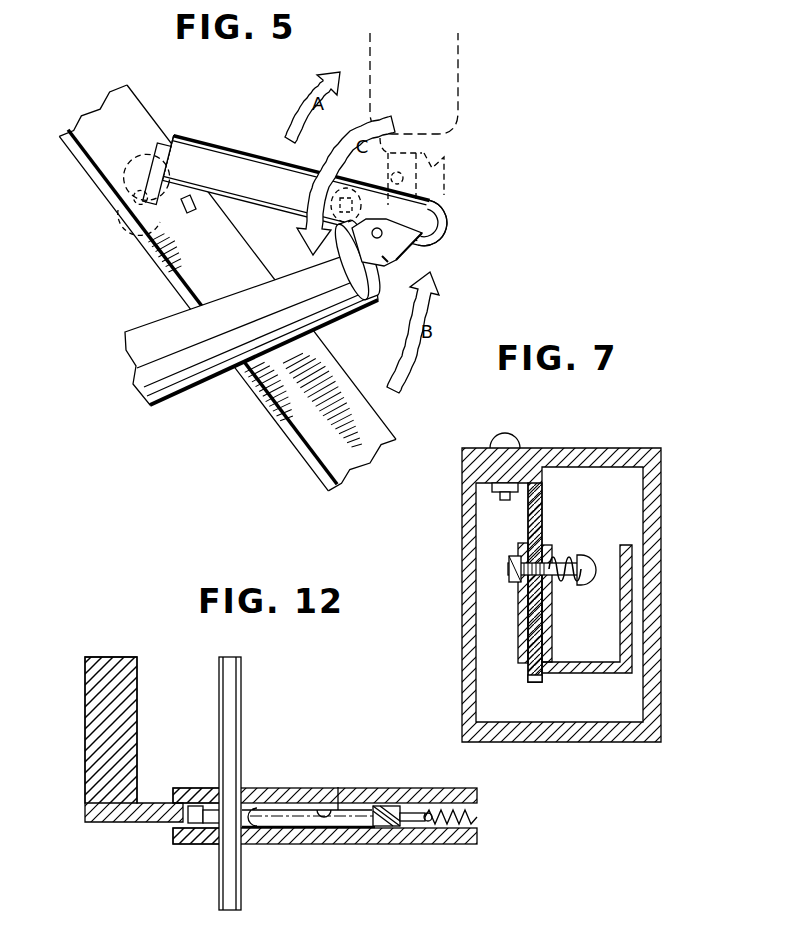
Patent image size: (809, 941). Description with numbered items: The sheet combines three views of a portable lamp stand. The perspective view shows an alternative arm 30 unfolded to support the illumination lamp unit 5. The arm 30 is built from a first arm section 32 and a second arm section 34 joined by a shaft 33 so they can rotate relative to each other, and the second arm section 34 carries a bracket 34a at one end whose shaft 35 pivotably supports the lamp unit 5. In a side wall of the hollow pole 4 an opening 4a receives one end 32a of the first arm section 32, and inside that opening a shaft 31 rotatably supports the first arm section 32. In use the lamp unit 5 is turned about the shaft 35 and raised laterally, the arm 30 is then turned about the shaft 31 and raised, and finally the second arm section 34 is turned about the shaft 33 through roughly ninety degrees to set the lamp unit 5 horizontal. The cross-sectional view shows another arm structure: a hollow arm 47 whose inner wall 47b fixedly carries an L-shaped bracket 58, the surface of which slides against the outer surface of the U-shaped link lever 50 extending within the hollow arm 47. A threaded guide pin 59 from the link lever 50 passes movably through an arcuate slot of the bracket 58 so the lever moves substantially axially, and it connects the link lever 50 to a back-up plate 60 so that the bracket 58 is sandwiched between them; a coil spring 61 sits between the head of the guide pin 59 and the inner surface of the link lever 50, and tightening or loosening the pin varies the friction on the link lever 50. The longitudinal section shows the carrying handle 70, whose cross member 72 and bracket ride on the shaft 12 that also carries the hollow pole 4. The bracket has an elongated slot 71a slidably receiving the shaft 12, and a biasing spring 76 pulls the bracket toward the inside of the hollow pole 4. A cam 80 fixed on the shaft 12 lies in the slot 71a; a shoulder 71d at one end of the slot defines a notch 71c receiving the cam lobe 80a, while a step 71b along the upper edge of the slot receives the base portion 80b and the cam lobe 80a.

In FIG. 5, the hollow pole 4 is at (93, 182).
In FIG. 12, the hollow pole 4 is at (320, 845).
In FIG. 5, the opening 4a is at (191, 204).
In FIG. 5, the illumination lamp unit 5 is at (181, 394).
In FIG. 12, the shaft 12 is at (243, 690).
In FIG. 5, the arm 30 is at (262, 130).
In FIG. 5, the shaft 31 is at (137, 214).
In FIG. 5, the first arm section 32 is at (210, 143).
In FIG. 5, the one end of first arm section 32a is at (150, 173).
In FIG. 5, the shaft 33 is at (317, 178).
In FIG. 5, the second arm section 34 is at (447, 229).
In FIG. 5, the bracket 34a is at (410, 252).
In FIG. 5, the shaft 35 is at (378, 227).
In FIG. 7, the hollow arm 47 is at (608, 448).
In FIG. 7, the inner wall 47b is at (607, 468).
In FIG. 7, the link lever 50 is at (633, 613).
In FIG. 7, the L-shaped bracket 58 is at (535, 683).
In FIG. 7, the threaded guide pin 59 is at (583, 567).
In FIG. 7, the back-up plate 60 is at (518, 610).
In FIG. 7, the coil spring 61 is at (568, 587).
In FIG. 12, the carrying handle 70 is at (110, 836).
In FIG. 12, the elongated slot 71a is at (374, 798).
In FIG. 12, the step 71b is at (338, 787).
In FIG. 12, the notch 71c is at (190, 836).
In FIG. 12, the shoulder 71d is at (205, 838).
In FIG. 12, the cross member 72 is at (127, 700).
In FIG. 12, the biasing spring 76 is at (447, 828).
In FIG. 12, the cam 80 is at (215, 842).
In FIG. 12, the cam lobe 80a is at (210, 788).
In FIG. 12, the base portion 80b is at (263, 824).